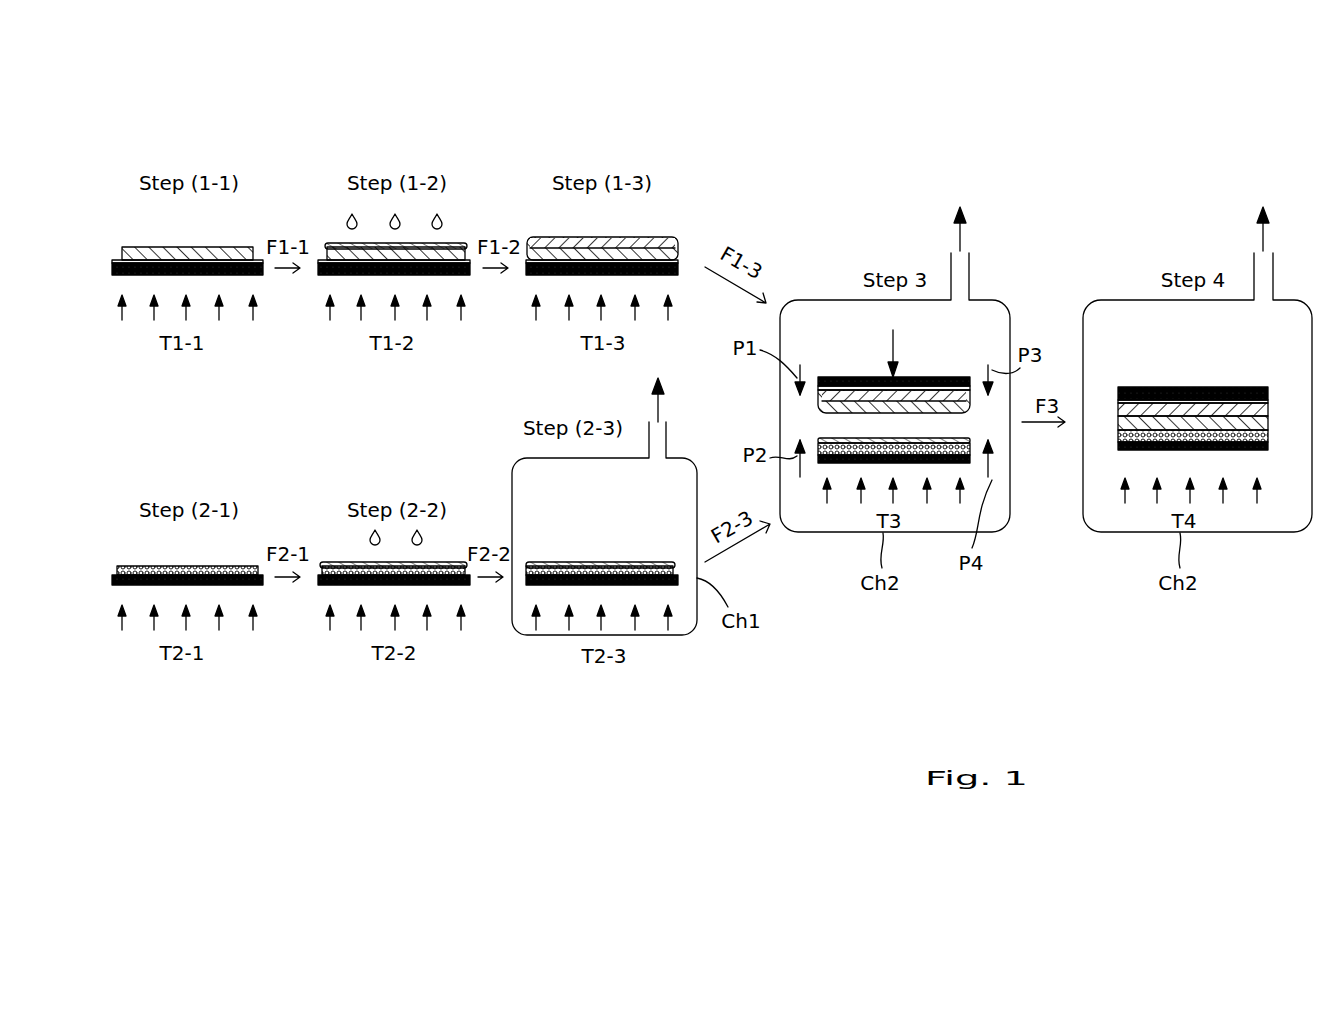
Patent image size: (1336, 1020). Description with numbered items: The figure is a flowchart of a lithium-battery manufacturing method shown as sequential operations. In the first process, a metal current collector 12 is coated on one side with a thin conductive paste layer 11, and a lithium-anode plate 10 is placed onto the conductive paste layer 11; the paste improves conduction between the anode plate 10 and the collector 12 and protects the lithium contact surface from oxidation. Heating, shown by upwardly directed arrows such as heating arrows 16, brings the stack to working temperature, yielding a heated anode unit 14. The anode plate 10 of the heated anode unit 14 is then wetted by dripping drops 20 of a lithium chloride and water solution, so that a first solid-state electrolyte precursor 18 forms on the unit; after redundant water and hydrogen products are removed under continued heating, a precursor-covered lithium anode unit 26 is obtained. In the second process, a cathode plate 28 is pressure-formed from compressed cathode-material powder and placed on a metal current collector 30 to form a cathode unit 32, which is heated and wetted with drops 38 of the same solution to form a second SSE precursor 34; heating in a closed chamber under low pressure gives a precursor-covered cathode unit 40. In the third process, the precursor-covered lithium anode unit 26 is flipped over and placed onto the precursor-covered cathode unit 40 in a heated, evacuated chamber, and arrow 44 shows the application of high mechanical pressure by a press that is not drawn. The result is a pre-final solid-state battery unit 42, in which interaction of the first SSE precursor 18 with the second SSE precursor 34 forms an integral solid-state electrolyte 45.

The lithium-anode plate 10 is at (142, 258).
The conductive paste layer 11 is at (113, 262).
The metal current collector 12 is at (113, 270).
The heated anode unit 14 is at (190, 202).
The heating 16 is at (150, 312).
The first solid-state electrolyte precursor 18 is at (330, 246).
The drops 20 is at (452, 211).
The precursor-covered lithium anode unit 26 is at (643, 238).
The cathode plate 28 is at (143, 567).
The metal current collector 30 is at (115, 586).
The cathode unit 32 is at (178, 598).
The second SSE precursor 34 is at (342, 563).
The drops 38 is at (432, 538).
The precursor-covered cathode unit 40 is at (522, 592).
The pre-final solid-state battery unit 42 is at (1190, 405).
The arrow indicating mechanical press 44 is at (890, 338).
The integral solid-state electrolyte 45 is at (1266, 430).